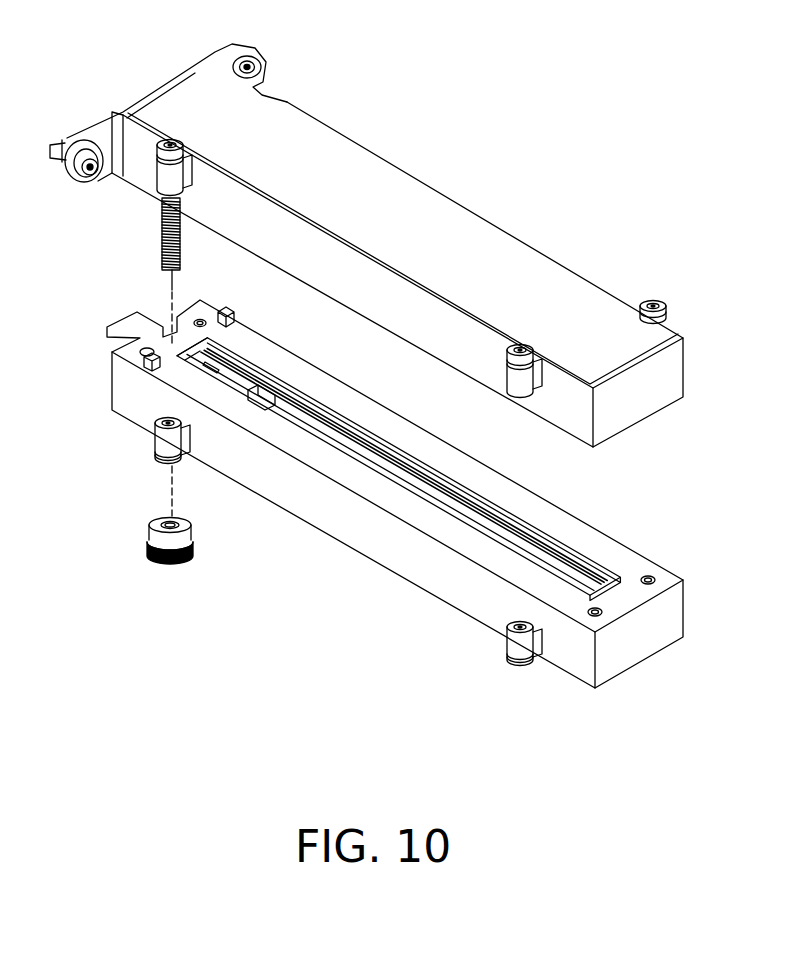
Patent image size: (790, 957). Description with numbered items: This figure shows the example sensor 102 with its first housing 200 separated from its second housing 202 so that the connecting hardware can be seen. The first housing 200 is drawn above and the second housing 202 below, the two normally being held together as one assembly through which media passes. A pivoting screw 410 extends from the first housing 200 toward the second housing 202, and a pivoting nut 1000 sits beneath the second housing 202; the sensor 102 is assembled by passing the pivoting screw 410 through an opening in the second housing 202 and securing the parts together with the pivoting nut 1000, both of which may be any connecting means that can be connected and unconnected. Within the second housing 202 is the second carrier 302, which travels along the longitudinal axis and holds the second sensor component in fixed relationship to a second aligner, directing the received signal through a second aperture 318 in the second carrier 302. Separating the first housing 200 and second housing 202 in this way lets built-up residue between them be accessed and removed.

The sensor 102 is at (605, 207).
The first housing 200 is at (437, 328).
The second housing 202 is at (353, 538).
The second carrier 302 is at (195, 360).
The second aperture 318 is at (217, 373).
The pivoting screw 410 is at (162, 237).
The pivoting nut 1000 is at (172, 565).